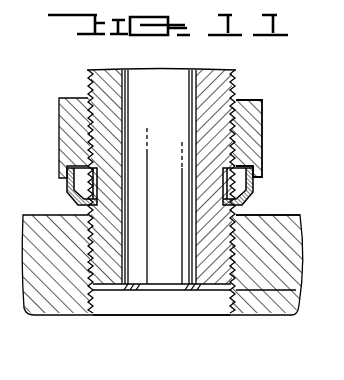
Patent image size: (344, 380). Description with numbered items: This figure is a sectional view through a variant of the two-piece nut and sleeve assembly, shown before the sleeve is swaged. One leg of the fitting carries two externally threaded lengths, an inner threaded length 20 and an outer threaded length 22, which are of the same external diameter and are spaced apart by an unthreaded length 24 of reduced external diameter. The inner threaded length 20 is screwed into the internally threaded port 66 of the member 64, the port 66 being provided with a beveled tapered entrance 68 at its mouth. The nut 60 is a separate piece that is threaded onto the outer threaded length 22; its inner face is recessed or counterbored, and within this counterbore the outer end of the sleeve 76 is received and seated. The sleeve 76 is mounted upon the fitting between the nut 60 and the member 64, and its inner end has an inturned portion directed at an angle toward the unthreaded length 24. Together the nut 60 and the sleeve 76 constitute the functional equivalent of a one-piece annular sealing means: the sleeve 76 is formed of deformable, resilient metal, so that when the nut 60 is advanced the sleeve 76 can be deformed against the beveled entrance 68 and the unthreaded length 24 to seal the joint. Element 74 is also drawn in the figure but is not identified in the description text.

The inner externally threaded length 20 is at (88, 290).
The outer externally threaded length 22 is at (235, 88).
The unthreaded length 24 is at (227, 183).
The nut 60 is at (67, 130).
The member 64 is at (275, 300).
The internally threaded port 66 is at (98, 313).
The beveled tapered entrance 68 is at (250, 216).
The right seal ring 74 is at (237, 167).
The sleeve 76 is at (68, 185).